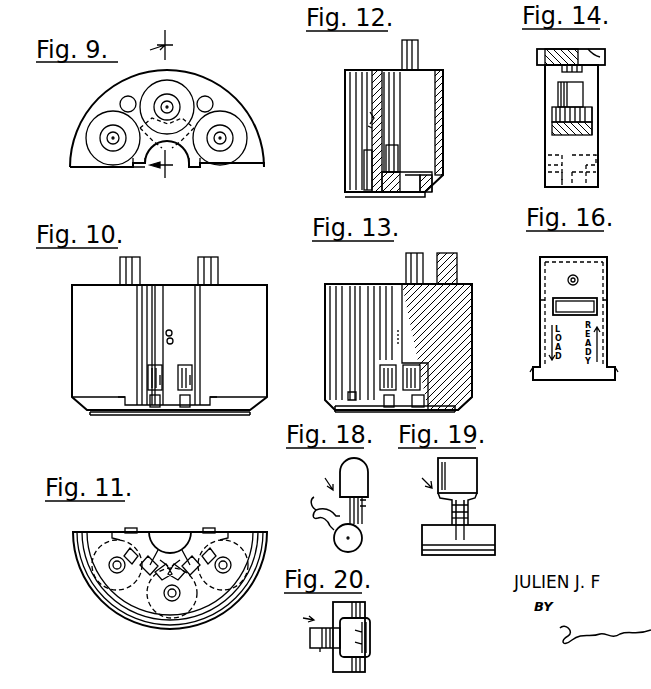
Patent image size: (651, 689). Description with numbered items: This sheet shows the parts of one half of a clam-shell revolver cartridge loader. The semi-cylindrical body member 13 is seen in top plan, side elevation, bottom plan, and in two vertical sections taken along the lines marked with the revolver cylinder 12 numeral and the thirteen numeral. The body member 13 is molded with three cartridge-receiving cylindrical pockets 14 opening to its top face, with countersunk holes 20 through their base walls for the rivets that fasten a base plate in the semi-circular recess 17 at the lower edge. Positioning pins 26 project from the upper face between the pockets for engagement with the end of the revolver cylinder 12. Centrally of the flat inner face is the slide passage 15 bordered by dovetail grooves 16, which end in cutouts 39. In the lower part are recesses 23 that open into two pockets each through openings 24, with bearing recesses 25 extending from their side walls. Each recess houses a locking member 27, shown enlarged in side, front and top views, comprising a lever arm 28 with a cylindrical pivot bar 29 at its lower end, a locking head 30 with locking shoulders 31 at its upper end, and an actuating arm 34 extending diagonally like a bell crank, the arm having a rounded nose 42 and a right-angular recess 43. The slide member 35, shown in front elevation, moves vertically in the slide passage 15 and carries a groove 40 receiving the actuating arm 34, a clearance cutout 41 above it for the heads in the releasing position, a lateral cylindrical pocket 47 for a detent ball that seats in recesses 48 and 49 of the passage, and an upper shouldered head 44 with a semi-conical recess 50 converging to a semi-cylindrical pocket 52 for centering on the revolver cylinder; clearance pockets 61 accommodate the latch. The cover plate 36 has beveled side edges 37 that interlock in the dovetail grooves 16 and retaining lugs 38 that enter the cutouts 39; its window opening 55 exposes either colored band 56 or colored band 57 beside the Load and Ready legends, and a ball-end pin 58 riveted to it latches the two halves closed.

In FIG. 9, the revolver cylinder 12 is at (169, 104).
In FIG. 9, the semi-cylindrical body member 13 is at (85, 102).
In FIG. 10, the semi-cylindrical body member 13 is at (72, 318).
In FIG. 11, the semi-cylindrical body member 13 is at (108, 598).
In FIG. 12, the semi-cylindrical body member 13 is at (444, 102).
In FIG. 13, the semi-cylindrical body member 13 is at (472, 334).
In FIG. 9, the cartridge-receiving cylindrical pockets 14 is at (88, 128).
In FIG. 11, the cartridge-receiving cylindrical pockets 14 is at (88, 583).
In FIG. 12, the cartridge-receiving cylindrical pockets 14 is at (440, 120).
In FIG. 9, the slide passage 15 is at (146, 170).
In FIG. 10, the slide passage 15 is at (147, 300).
In FIG. 11, the slide passage 15 is at (196, 540).
In FIG. 12, the slide passage 15 is at (372, 84).
In FIG. 13, the slide passage 15 is at (400, 300).
In FIG. 9, the dovetail grooves 16 is at (136, 170).
In FIG. 10, the dovetail grooves 16 is at (137, 340).
In FIG. 11, the dovetail grooves 16 is at (140, 530).
In FIG. 12, the dovetail grooves 16 is at (350, 128).
In FIG. 13, the dovetail grooves 16 is at (362, 300).
In FIG. 10, the semi-circular recess 17 is at (98, 415).
In FIG. 11, the semi-circular recess 17 is at (92, 540).
In FIG. 12, the semi-circular recess 17 is at (420, 197).
In FIG. 13, the semi-circular recess 17 is at (456, 410).
In FIG. 9, the countersunk holes 20 is at (104, 140).
In FIG. 11, the countersunk holes 20 is at (110, 565).
In FIG. 9, the recesses 23 is at (198, 128).
In FIG. 10, the recesses 23 is at (192, 372).
In FIG. 11, the recesses 23 is at (145, 575).
In FIG. 12, the recesses 23 is at (364, 162).
In FIG. 13, the recesses 23 is at (385, 365).
In FIG. 10, the openings 24 is at (192, 378).
In FIG. 12, the openings 24 is at (398, 152).
In FIG. 13, the openings 24 is at (420, 384).
In FIG. 10, the bearing recesses 25 is at (186, 407).
In FIG. 11, the bearing recesses 25 is at (128, 548).
In FIG. 13, the bearing recesses 25 is at (424, 398).
In FIG. 9, the positioning pins 26 is at (126, 97).
In FIG. 10, the positioning pins 26 is at (200, 262).
In FIG. 12, the positioning pins 26 is at (418, 56).
In FIG. 13, the positioning pins 26 is at (458, 258).
In FIG. 18, the locking member 27 is at (319, 478).
In FIG. 19, the locking member 27 is at (416, 477).
In FIG. 20, the locking member 27 is at (297, 614).
In FIG. 18, the lever arm 28 is at (366, 506).
In FIG. 19, the lever arm 28 is at (470, 503).
In FIG. 20, the lever arm 28 is at (368, 638).
In FIG. 18, the cylindrical pivot bar 29 is at (363, 538).
In FIG. 19, the cylindrical pivot bar 29 is at (496, 526).
In FIG. 20, the cylindrical pivot bar 29 is at (366, 608).
In FIG. 18, the locking head 30 is at (360, 468).
In FIG. 19, the locking head 30 is at (478, 466).
In FIG. 20, the locking head 30 is at (370, 626).
In FIG. 18, the locking shoulders 31 is at (364, 498).
In FIG. 19, the locking shoulders 31 is at (478, 490).
In FIG. 18, the actuating arm 34 is at (332, 530).
In FIG. 19, the actuating arm 34 is at (458, 540).
In FIG. 20, the actuating arm 34 is at (325, 650).
In FIG. 14, the slide member 35 is at (545, 94).
In FIG. 16, the cover plate 36 is at (548, 279).
In FIG. 16, the beveled side edges 37 is at (540, 298).
In FIG. 16, the retaining lugs 38 is at (533, 380).
In FIG. 10, the cutouts 39 is at (124, 398).
In FIG. 11, the cutouts 39 is at (130, 527).
In FIG. 13, the cutouts 39 is at (346, 408).
In FIG. 14, the groove 40 is at (590, 174).
In FIG. 14, the clearance cutout 41 is at (588, 160).
In FIG. 18, the rounded nose 42 is at (314, 498).
In FIG. 20, the rounded nose 42 is at (312, 638).
In FIG. 18, the right-angular recess 43 is at (316, 514).
In FIG. 19, the right-angular recess 43 is at (468, 518).
In FIG. 14, the shouldered head 44 is at (537, 56).
In FIG. 14, the lateral cylindrical pocket 47 is at (598, 112).
In FIG. 10, the recess 48 is at (171, 331).
In FIG. 12, the recess 48 is at (370, 114).
In FIG. 10, the recess 49 is at (178, 348).
In FIG. 12, the recess 49 is at (370, 126).
In FIG. 14, the semi-conical recess 50 is at (593, 42).
In FIG. 14, the semi-cylindrical pocket 52 is at (586, 70).
In FIG. 16, the window opening 55 is at (553, 312).
In FIG. 14, the colored band 56 is at (552, 116).
In FIG. 14, the colored band 57 is at (552, 130).
In FIG. 16, the ball-end pin 58 is at (568, 278).
In FIG. 14, the clearance pockets 61 is at (580, 93).